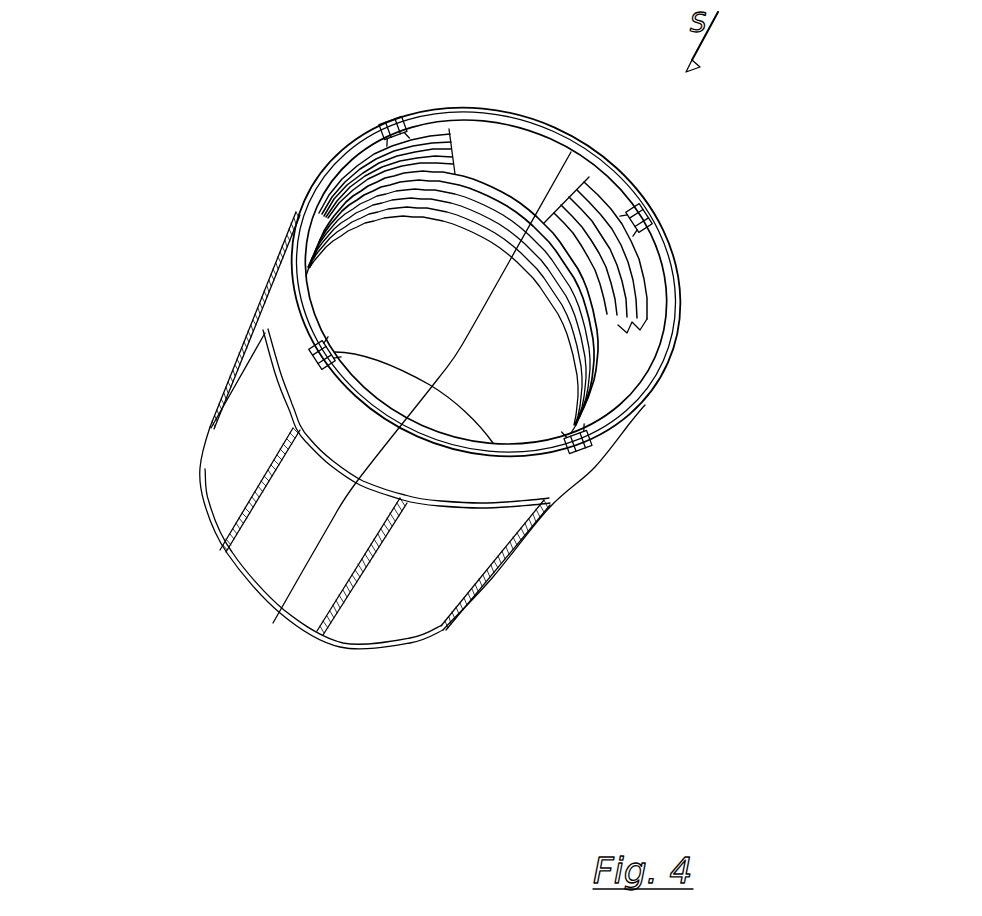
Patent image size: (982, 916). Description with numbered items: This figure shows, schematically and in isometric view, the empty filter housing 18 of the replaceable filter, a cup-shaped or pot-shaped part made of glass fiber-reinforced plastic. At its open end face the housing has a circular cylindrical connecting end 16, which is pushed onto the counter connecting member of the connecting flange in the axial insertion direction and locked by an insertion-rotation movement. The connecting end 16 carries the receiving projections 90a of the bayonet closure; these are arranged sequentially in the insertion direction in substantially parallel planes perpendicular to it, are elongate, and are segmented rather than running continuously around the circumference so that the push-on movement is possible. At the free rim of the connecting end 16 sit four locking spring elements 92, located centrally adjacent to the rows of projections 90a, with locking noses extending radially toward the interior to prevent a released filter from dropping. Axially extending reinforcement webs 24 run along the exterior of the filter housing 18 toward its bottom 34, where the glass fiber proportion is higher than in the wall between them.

The filter housing 18 is at (430, 413).
The connecting end 16 is at (291, 256).
The reinforcement webs 24 is at (263, 333).
The bottom 34 is at (410, 645).
The receiving projections 90a is at (440, 143).
The locking spring elements 92 is at (316, 358).